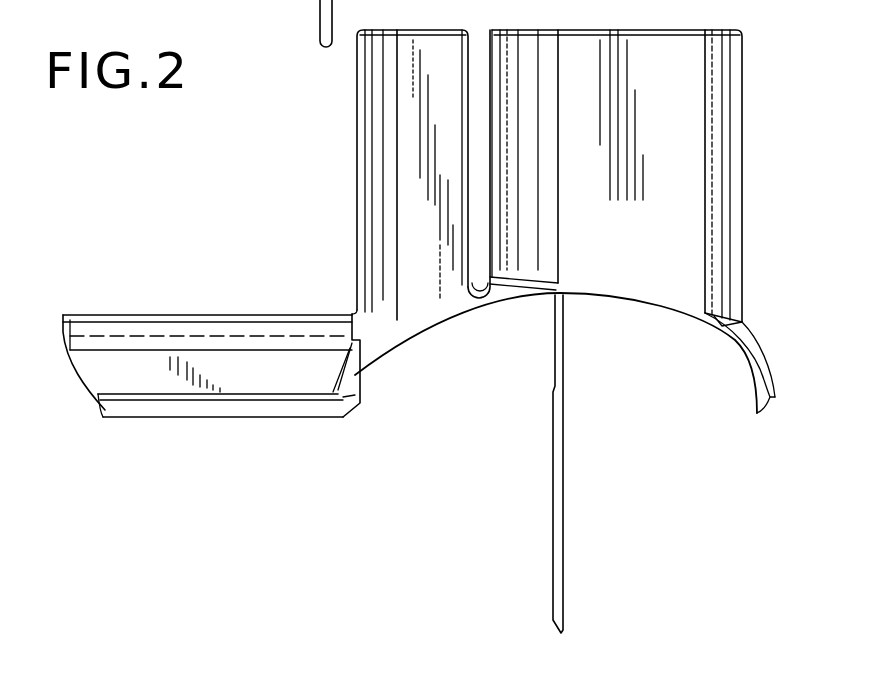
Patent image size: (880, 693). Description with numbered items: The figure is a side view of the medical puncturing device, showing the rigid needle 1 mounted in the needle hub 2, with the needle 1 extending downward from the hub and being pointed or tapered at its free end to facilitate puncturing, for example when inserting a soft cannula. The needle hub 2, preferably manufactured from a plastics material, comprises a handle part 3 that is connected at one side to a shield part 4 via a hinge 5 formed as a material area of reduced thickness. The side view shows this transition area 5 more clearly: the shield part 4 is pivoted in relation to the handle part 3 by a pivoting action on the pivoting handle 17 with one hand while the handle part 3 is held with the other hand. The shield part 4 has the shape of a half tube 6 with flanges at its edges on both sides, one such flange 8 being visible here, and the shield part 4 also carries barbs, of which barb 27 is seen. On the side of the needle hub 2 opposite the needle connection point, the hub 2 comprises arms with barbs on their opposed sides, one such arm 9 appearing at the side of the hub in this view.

The rigid needle 1 is at (553, 560).
The needle hub 2 is at (292, 167).
The handle part 3 is at (665, 155).
The shield part 4 is at (410, 95).
The hinge 5 is at (482, 297).
The half tube 6 is at (292, 340).
The flange 8 is at (140, 395).
The arm 9 is at (762, 418).
The pivoting handle 17 is at (422, 282).
The barb 27 is at (362, 402).